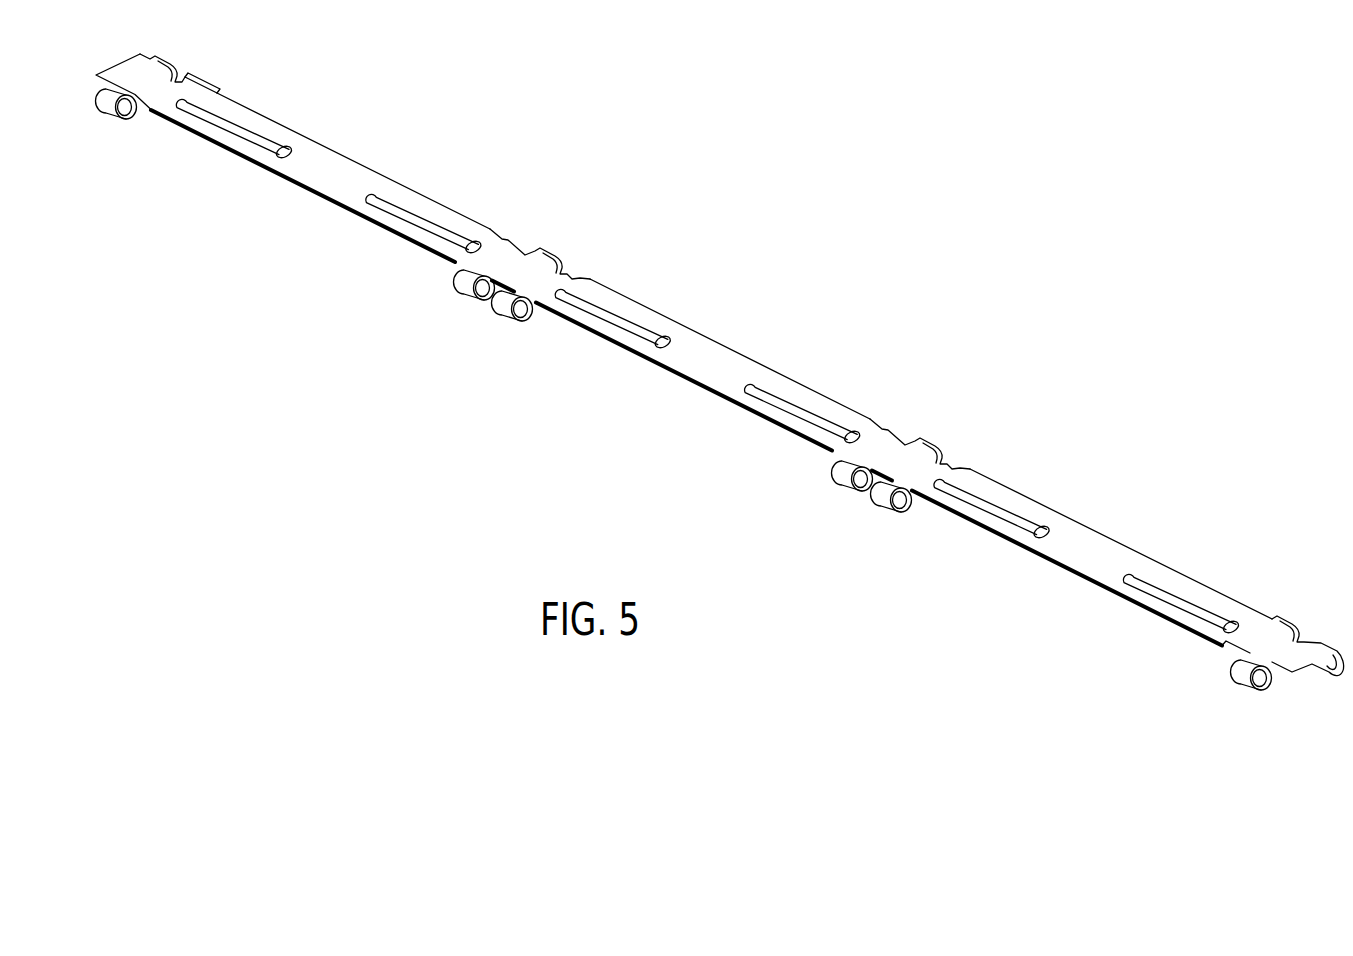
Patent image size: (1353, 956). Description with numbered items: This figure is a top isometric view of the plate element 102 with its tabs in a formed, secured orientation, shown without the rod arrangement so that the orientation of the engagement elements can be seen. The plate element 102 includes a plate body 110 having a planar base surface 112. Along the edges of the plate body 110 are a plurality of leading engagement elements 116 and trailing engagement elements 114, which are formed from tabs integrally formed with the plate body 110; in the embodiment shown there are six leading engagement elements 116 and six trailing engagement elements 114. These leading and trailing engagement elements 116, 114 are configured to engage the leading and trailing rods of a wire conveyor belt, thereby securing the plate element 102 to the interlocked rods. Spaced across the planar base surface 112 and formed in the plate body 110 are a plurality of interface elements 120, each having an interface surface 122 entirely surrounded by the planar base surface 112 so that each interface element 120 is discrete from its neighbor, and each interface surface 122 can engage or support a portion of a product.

The plate element 102 is at (1090, 103).
The plate body 110 is at (315, 140).
The planar base surface 112 is at (368, 187).
The trailing engagement elements 114 is at (102, 104).
The leading engagement elements 116 is at (541, 252).
The interface elements 120 is at (770, 388).
The interface surface 122 is at (824, 421).